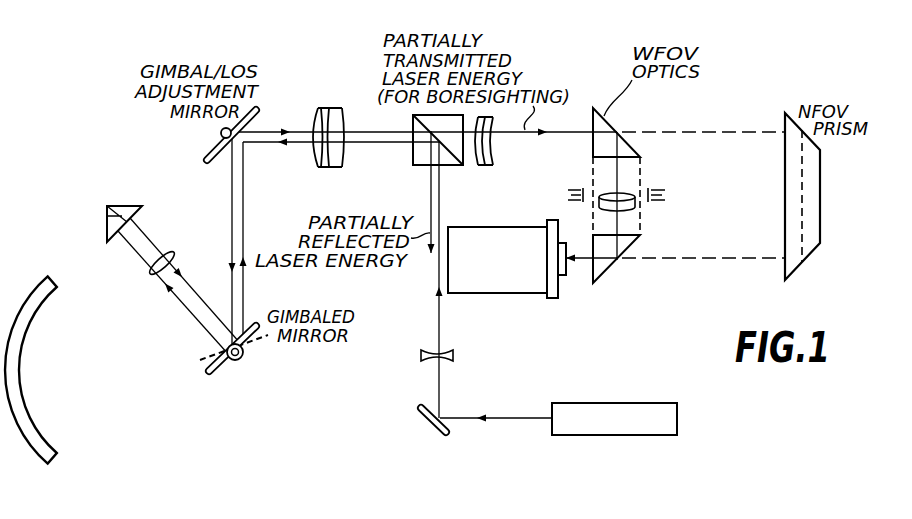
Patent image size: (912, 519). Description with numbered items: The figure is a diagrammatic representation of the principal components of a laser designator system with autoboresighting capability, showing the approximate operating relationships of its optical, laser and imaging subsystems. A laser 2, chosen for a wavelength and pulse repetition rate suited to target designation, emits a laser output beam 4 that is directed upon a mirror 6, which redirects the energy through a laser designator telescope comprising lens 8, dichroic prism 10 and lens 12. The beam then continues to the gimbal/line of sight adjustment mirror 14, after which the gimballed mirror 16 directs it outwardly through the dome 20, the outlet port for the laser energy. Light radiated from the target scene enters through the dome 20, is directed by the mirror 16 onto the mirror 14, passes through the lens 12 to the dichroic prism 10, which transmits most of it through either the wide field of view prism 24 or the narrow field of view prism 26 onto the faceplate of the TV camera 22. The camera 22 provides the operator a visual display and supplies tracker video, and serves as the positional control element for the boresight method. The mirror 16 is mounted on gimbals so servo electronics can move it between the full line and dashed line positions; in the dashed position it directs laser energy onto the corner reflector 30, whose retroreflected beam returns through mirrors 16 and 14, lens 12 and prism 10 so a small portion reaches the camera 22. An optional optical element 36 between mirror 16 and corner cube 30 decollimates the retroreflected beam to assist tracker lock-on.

The laser 2 is at (610, 436).
The laser output beam 4 is at (525, 418).
The mirror 6 is at (447, 432).
The lens 8 is at (452, 356).
The dichroic prism 10 is at (422, 167).
The lens 12 is at (343, 166).
The gimbal/line of sight adjustment mirror 14 is at (258, 112).
The gimballed mirror 16 is at (250, 347).
The dome 20 is at (40, 453).
The TV camera 22 is at (481, 293).
The wide field of view (WFOV) prism 24 is at (642, 224).
The narrow field of view (NFOV) prism 26 is at (822, 228).
The corner reflector 30 is at (107, 229).
The optical element 36 is at (169, 254).